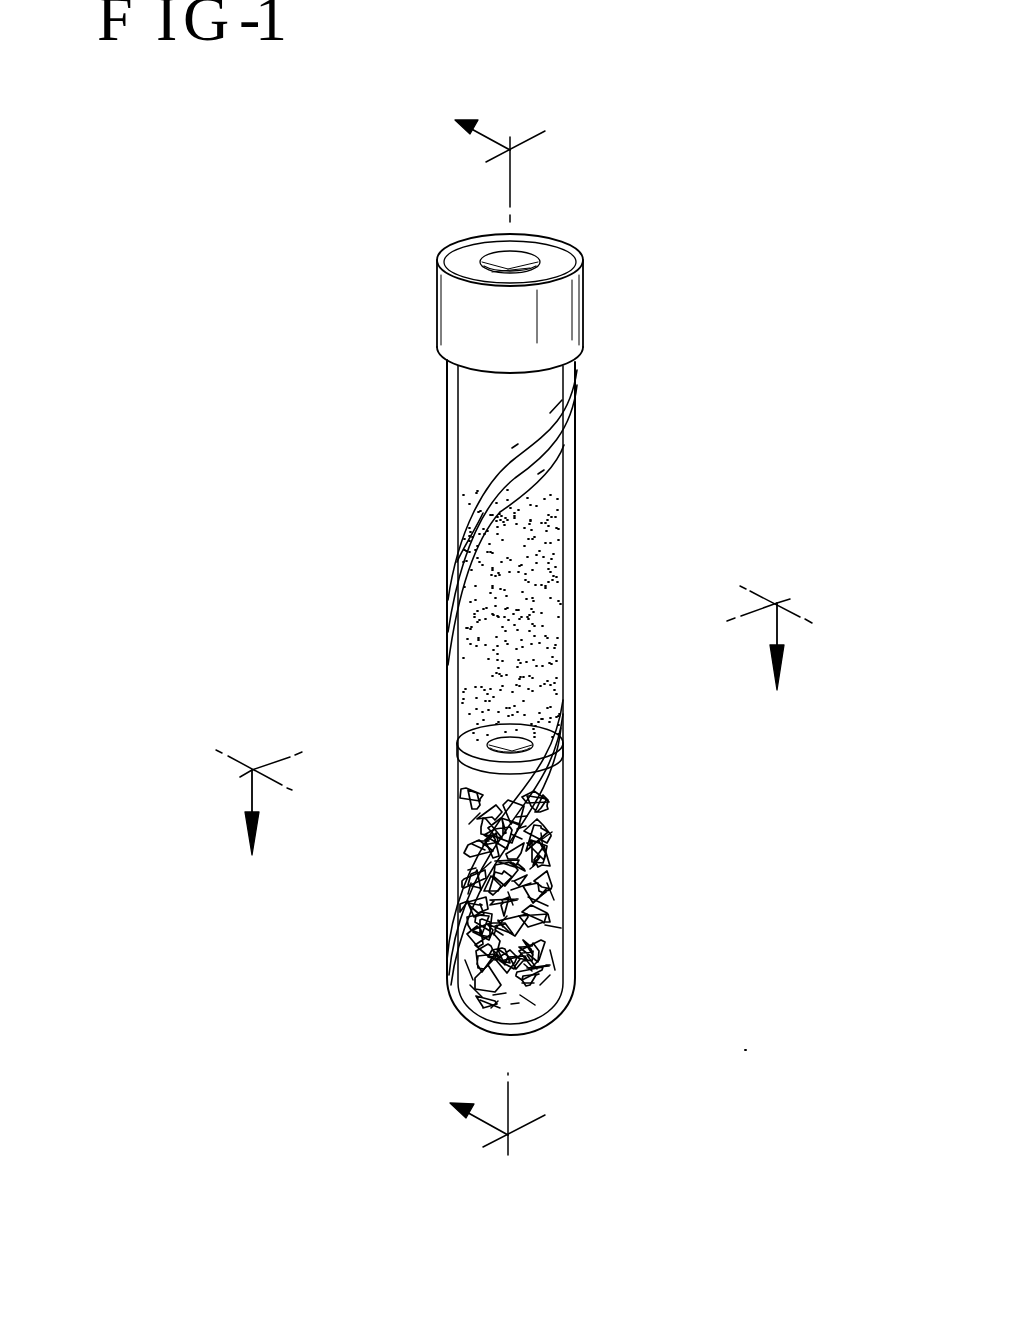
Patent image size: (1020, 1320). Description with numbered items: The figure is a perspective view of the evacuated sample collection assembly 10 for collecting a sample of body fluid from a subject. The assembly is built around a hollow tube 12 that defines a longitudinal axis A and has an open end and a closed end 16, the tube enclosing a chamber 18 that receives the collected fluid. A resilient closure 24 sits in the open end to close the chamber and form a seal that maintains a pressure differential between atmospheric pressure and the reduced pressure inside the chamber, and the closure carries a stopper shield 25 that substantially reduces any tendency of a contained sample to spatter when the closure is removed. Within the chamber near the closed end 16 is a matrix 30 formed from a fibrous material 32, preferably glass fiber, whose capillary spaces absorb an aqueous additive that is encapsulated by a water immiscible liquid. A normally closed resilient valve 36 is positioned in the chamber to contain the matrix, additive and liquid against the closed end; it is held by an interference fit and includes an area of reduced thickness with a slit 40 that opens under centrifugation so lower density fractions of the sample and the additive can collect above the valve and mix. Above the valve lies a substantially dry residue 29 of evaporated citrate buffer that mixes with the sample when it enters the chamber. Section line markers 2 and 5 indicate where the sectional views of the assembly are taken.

The assembly 10 is at (706, 186).
The hollow tube 12 is at (575, 548).
The closed end 16 is at (515, 1036).
The chamber 18 is at (548, 476).
The resilient closure 24 is at (502, 255).
The shield 25 is at (568, 311).
The dry residue 29 is at (497, 585).
The matrix 30 is at (540, 921).
The fibrous material 32 is at (465, 840).
The resilient valve 36 is at (545, 741).
The slit 40 is at (502, 742).
The section line 2 is at (497, 647).
The section line 5 is at (514, 718).
The axis A is at (513, 196).